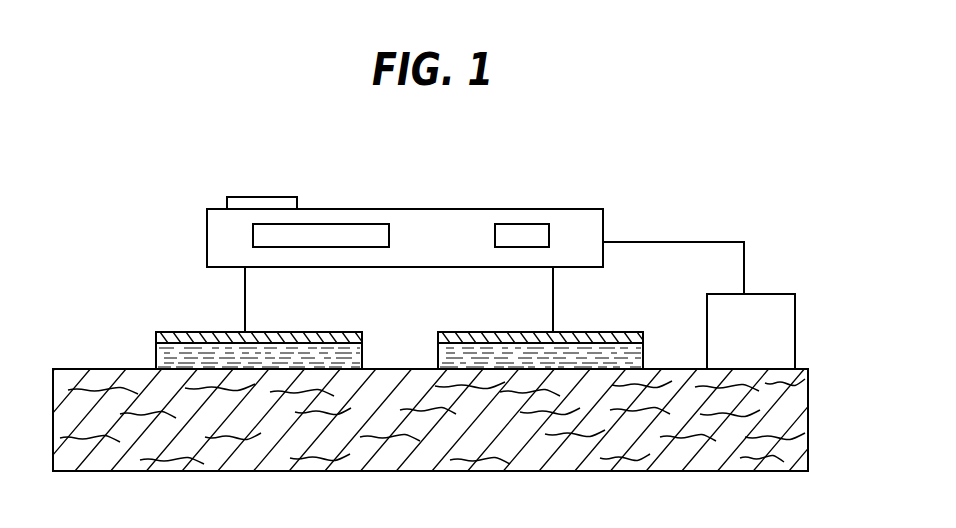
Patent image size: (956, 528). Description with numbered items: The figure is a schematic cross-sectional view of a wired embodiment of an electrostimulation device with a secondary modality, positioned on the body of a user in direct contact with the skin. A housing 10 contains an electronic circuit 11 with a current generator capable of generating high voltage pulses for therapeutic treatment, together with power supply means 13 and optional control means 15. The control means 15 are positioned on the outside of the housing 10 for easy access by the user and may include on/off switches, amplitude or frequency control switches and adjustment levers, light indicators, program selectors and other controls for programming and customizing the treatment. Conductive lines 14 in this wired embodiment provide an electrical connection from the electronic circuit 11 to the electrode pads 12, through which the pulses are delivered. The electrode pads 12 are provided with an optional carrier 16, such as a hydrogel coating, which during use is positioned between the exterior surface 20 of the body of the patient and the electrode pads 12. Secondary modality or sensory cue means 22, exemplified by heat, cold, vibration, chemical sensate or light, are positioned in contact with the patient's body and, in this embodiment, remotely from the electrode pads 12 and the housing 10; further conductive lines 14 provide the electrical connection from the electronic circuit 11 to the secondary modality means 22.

The housing 10 is at (583, 222).
The electronic circuit 11 is at (322, 233).
The electrode pads 12 is at (178, 331).
The power supply means 13 is at (515, 231).
The conductive lines 14 is at (247, 310).
The control means 15 is at (252, 197).
The carrier 16 is at (165, 358).
The exterior surface of the body 20 is at (553, 435).
The secondary modality means 22 is at (762, 305).